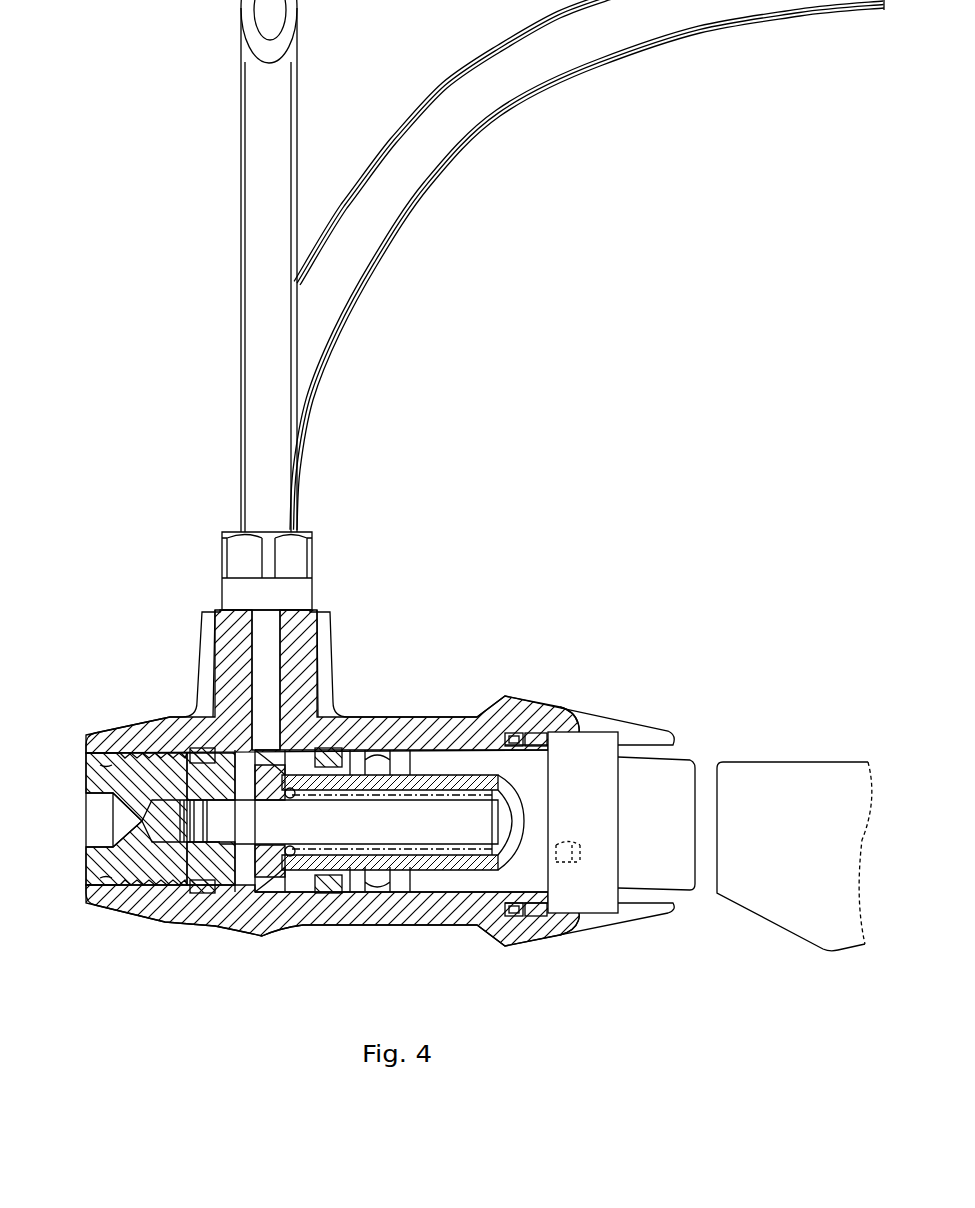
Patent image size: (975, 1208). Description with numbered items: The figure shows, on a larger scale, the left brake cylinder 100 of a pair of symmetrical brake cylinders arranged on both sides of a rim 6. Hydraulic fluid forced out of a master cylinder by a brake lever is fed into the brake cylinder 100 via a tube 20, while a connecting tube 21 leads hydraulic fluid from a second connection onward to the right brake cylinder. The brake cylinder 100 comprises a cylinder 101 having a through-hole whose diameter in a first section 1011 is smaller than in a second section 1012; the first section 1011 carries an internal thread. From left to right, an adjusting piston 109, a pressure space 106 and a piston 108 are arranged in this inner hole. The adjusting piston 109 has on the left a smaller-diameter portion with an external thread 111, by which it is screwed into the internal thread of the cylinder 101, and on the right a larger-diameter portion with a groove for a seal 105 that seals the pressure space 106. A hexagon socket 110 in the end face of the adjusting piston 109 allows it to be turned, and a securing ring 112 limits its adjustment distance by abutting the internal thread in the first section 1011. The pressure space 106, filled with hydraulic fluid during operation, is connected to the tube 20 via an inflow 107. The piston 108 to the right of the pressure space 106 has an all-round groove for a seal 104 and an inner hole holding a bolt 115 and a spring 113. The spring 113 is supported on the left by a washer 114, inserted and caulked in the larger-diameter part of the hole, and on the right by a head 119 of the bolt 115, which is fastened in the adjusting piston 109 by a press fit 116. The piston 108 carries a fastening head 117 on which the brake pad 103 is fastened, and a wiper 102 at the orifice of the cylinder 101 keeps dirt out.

The rim 6 is at (797, 857).
The tube 20 is at (255, 294).
The connecting tube 21 is at (433, 157).
The brake cylinder 100 is at (520, 665).
The cylinder 101 is at (407, 720).
The wiper 102 is at (505, 926).
The brake pad 103 is at (674, 837).
The seal 104 is at (327, 893).
The seal 105 is at (207, 895).
The pressure space 106 is at (257, 895).
The inflow 107 is at (258, 636).
The piston 108 is at (437, 748).
The adjusting piston 109 is at (100, 855).
The hexagon socket 110 is at (95, 806).
The external thread 111 is at (148, 752).
The securing ring 112 is at (103, 766).
The spring 113 is at (500, 862).
The washer 114 is at (282, 888).
The bolt 115 is at (360, 834).
The press fit 116 is at (205, 812).
The fastening head 117 is at (570, 848).
The head 119 is at (498, 800).
The first section 1011 is at (150, 912).
The second section 1012 is at (402, 918).